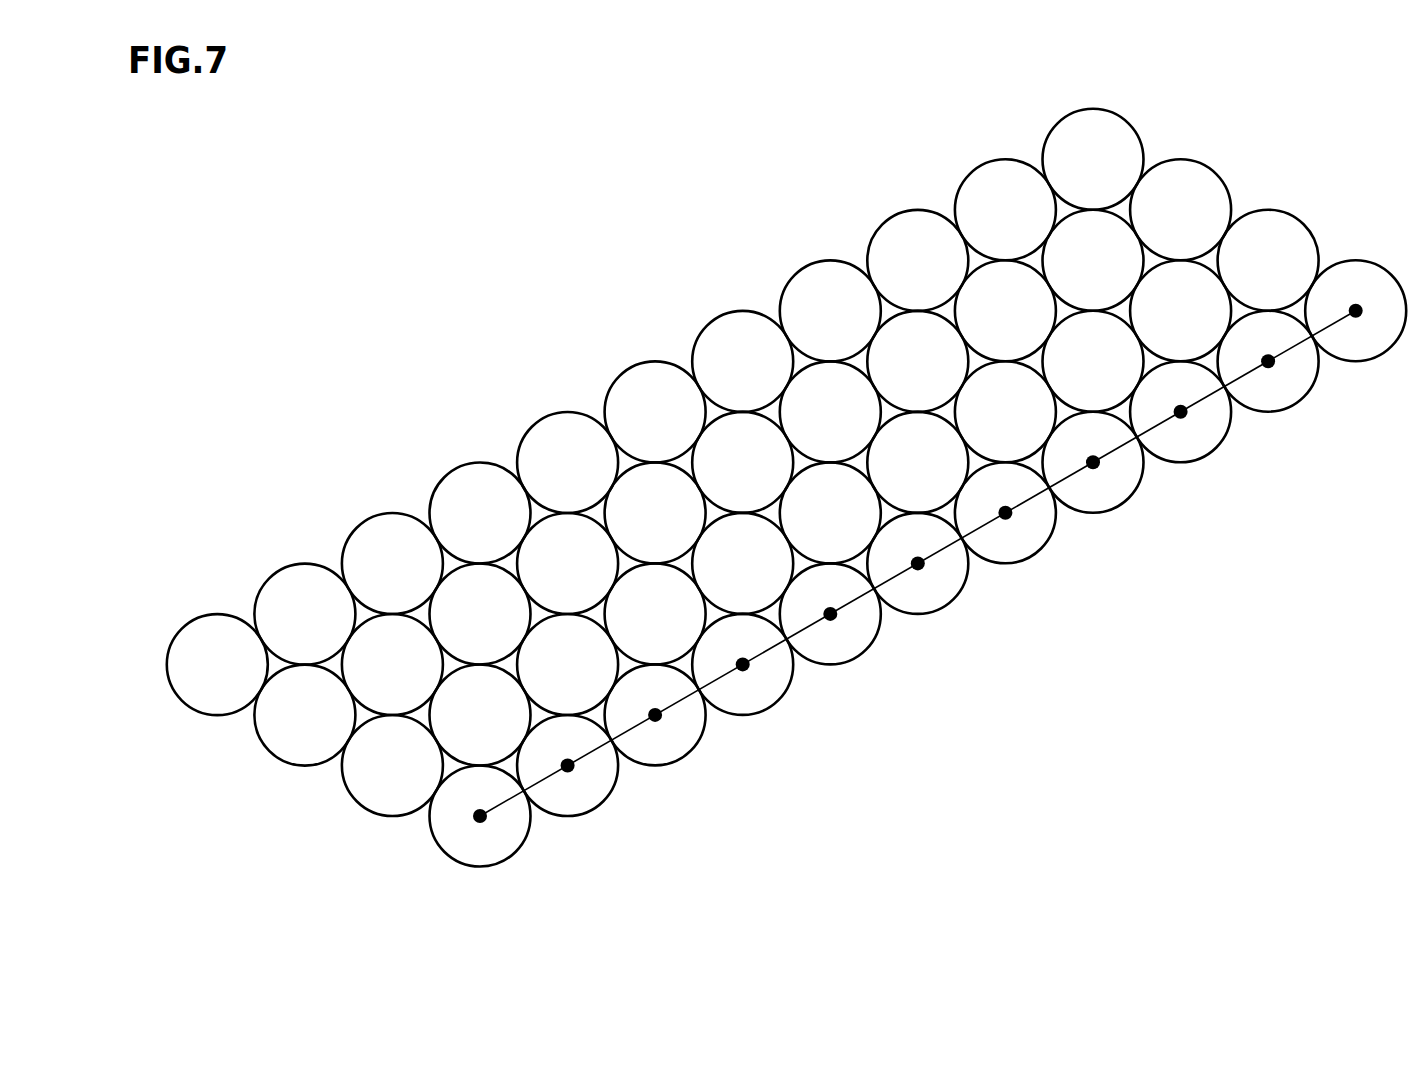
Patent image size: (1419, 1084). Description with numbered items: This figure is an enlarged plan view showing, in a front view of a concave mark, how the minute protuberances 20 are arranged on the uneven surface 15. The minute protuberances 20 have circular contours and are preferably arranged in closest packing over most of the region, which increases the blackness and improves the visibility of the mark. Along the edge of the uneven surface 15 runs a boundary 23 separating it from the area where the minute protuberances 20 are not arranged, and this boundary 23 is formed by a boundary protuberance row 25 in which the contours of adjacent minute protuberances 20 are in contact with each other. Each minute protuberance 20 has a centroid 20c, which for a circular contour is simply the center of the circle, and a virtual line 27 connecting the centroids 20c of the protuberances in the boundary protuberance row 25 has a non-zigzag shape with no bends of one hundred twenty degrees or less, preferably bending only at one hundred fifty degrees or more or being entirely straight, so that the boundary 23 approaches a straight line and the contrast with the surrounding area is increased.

The uneven surface 15 is at (786, 538).
The minute protuberances 20 is at (786, 538).
The centroid 20c is at (1180, 420).
The boundary 23 is at (869, 614).
The boundary protuberance row 25 is at (438, 868).
The virtual line 27 is at (765, 650).